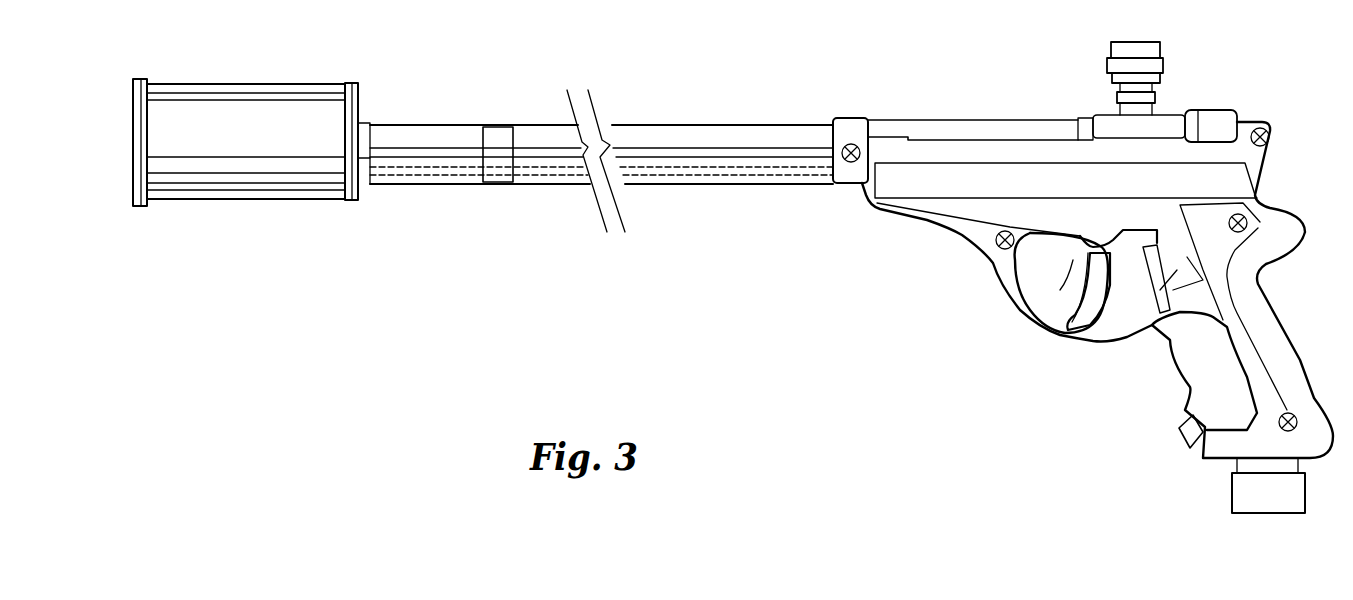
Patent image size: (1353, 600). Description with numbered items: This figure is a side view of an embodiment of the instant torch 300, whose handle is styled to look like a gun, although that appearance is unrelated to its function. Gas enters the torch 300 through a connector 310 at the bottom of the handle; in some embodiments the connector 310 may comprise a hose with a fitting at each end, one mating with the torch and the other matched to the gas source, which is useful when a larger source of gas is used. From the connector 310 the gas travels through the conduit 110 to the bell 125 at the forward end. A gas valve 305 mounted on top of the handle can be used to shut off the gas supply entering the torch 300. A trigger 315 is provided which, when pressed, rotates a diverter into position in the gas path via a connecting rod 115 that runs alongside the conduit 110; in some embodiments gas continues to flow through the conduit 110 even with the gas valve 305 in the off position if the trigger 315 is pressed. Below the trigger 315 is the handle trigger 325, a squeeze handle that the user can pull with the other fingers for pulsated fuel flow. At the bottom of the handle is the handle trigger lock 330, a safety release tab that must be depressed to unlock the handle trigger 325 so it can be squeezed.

The bell 125 is at (254, 95).
The conduit 110 is at (652, 124).
The connecting rod 115 is at (662, 175).
The gas valve 305 is at (1102, 60).
The torch 300 is at (1218, 101).
The trigger 315 is at (1080, 292).
The handle trigger 325 is at (1165, 345).
The handle trigger lock 330 is at (1183, 437).
The connector 310 is at (1240, 488).